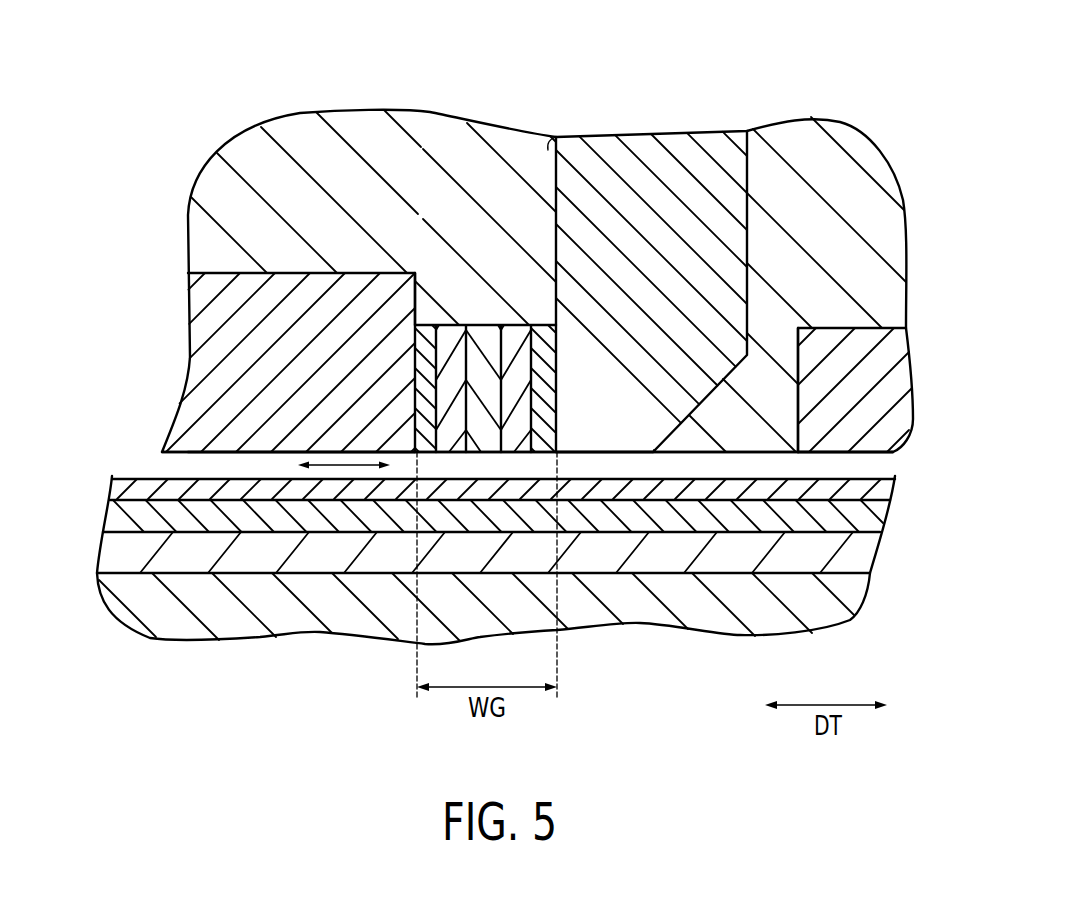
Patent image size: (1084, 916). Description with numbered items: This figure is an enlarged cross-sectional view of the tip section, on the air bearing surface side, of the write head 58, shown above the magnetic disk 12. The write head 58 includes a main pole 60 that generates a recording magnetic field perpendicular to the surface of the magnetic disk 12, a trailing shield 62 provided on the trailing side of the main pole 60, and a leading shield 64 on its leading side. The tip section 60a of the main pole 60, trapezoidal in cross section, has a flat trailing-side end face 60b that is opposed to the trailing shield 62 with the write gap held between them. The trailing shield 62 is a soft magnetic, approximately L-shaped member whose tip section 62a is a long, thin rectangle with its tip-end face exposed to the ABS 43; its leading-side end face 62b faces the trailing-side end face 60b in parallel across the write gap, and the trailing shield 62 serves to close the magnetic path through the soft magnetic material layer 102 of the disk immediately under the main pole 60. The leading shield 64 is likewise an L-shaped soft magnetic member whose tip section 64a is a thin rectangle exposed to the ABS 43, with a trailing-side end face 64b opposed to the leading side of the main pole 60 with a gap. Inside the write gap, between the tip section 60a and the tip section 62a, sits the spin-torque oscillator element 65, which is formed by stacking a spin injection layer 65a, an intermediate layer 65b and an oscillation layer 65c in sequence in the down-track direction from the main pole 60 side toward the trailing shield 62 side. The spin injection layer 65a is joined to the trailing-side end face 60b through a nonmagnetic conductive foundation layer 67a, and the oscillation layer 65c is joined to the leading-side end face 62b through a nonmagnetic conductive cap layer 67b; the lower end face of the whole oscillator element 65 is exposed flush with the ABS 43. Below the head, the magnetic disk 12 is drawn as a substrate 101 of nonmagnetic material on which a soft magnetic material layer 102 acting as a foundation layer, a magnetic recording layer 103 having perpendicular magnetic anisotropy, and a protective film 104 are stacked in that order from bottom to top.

The write head 58 is at (291, 95).
The main pole 60 is at (680, 157).
The tip section of the main pole 60a is at (636, 436).
The trailing-side end face 60b is at (552, 160).
The trailing shield 62 is at (205, 337).
The tip section of the trailing shield 62a is at (256, 438).
The leading-side end face 62b is at (427, 298).
The leading shield 64 is at (900, 375).
The tip section of the leading shield 64a is at (850, 433).
The trailing-side end face of the leading shield tip section 64b is at (798, 374).
The spin-torque oscillator element 65 is at (557, 75).
The spin injection layer 65a is at (522, 328).
The intermediate layer 65b is at (495, 328).
The oscillation layer 65c is at (462, 328).
The nonmagnetic conductive layer (foundation layer) 67a is at (548, 328).
The nonmagnetic conductive layer (cap layer) 67b is at (430, 328).
The ABS 43 is at (737, 455).
The magnetic disk 12 is at (470, 597).
The substrate 101 is at (130, 603).
The soft magnetic material layer 102 is at (115, 550).
The magnetic recording layer 103 is at (120, 512).
The protective film 104 is at (123, 485).